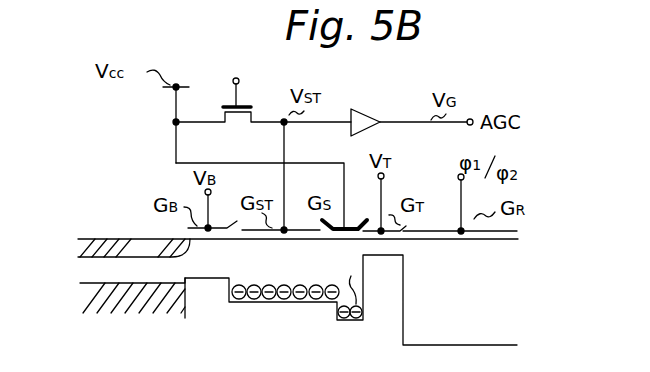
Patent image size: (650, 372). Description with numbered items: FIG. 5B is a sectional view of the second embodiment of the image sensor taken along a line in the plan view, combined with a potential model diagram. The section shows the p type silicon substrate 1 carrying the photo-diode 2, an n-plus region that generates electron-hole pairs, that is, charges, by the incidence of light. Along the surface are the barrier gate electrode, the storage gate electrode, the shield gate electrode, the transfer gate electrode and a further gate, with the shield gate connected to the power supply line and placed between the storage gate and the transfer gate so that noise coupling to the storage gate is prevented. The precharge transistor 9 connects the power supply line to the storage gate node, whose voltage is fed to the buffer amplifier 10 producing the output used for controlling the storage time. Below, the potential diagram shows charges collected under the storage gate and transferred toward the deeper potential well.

The p type silicon substrate 1 is at (103, 318).
The photo-diode 2 is at (131, 236).
The precharge transistor 9 is at (241, 101).
The buffer amplifier 10 is at (367, 114).